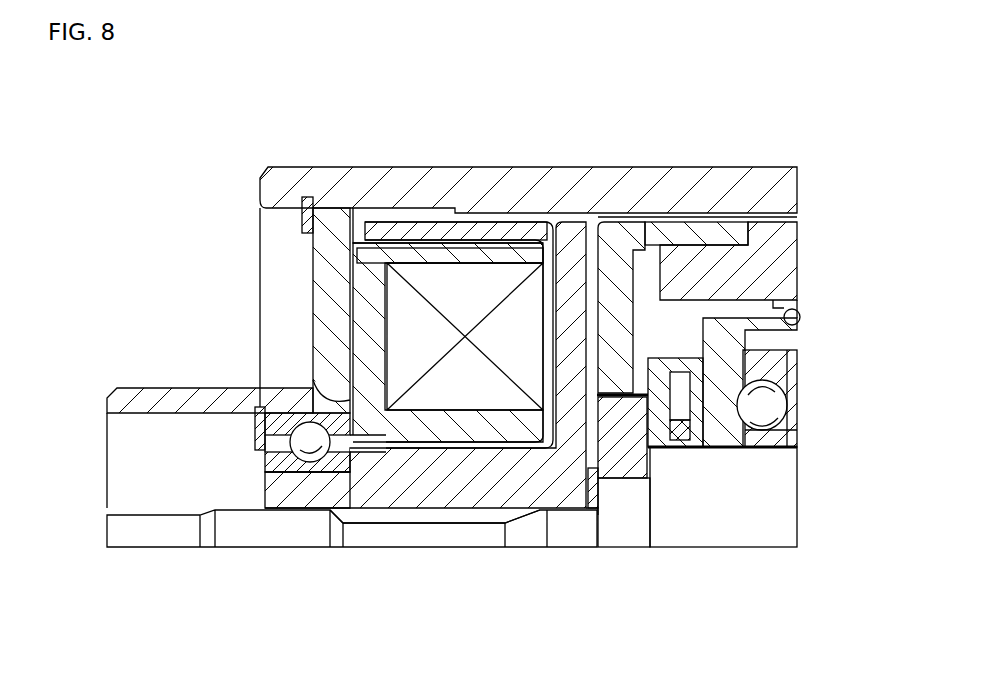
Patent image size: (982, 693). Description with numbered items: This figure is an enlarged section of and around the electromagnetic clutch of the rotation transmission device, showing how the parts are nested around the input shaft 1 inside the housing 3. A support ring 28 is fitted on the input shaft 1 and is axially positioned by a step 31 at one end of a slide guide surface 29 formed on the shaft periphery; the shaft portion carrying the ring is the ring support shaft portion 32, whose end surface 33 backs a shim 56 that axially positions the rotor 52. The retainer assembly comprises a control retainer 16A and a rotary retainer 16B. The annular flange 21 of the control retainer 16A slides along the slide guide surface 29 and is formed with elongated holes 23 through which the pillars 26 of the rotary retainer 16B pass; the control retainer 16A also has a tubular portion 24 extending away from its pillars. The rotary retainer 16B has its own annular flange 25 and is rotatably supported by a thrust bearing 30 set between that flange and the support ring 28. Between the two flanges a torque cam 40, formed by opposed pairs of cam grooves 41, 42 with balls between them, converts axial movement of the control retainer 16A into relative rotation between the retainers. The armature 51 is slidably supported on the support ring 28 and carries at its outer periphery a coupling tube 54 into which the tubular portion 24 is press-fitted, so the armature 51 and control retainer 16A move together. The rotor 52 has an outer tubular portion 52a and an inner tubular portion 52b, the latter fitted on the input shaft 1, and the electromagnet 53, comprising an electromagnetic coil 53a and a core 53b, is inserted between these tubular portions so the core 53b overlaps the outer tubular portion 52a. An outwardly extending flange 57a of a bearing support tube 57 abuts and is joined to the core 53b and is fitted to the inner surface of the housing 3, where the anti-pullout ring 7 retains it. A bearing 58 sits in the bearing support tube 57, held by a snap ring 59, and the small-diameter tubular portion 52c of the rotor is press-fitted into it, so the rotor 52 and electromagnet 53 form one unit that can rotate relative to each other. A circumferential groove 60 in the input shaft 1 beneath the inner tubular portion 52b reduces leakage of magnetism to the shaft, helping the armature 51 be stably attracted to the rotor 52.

The input shaft 1 is at (228, 537).
The housing 3 is at (272, 169).
The anti-pullout ring 7 is at (300, 224).
The control retainer 16A is at (751, 185).
The rotary retainer 16B is at (780, 440).
The annular flange 21 is at (793, 433).
The elongated holes 23 is at (797, 322).
The tubular portion 24 is at (708, 257).
The annular flange 25 is at (717, 447).
The pillars 26 is at (783, 343).
The support ring 28 is at (631, 470).
The slide guide surface 29 is at (785, 445).
The thrust bearing 30 is at (678, 491).
The step 31 is at (680, 440).
The ring support shaft portion 32 is at (612, 530).
The end surface 33 is at (580, 515).
The torque cam 40 is at (794, 487).
The cam grooves 41 is at (785, 418).
The cam grooves 42 is at (753, 440).
The armature 51 is at (650, 247).
The rotor 52 is at (492, 259).
The outer tubular portion 52a is at (503, 230).
The inner tubular portion 52b is at (487, 493).
The small-diameter tubular portion 52c is at (303, 493).
The electromagnet 53 is at (436, 274).
The electromagnetic coil 53a is at (466, 277).
The core 53b is at (417, 253).
The coupling tube 54 is at (678, 232).
The shim 56 is at (590, 470).
The bearing support tube 57 is at (155, 388).
The outwardly extending flange 57a is at (322, 280).
The bearing 58 is at (292, 420).
The snap ring 59 is at (256, 436).
The circumferential groove 60 is at (414, 517).